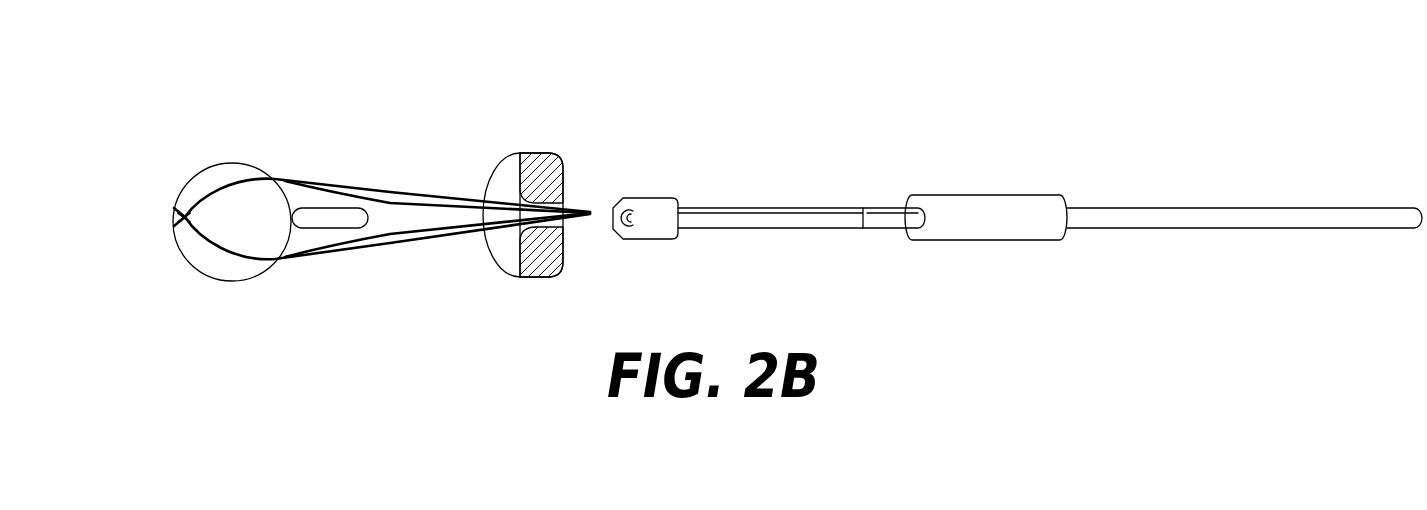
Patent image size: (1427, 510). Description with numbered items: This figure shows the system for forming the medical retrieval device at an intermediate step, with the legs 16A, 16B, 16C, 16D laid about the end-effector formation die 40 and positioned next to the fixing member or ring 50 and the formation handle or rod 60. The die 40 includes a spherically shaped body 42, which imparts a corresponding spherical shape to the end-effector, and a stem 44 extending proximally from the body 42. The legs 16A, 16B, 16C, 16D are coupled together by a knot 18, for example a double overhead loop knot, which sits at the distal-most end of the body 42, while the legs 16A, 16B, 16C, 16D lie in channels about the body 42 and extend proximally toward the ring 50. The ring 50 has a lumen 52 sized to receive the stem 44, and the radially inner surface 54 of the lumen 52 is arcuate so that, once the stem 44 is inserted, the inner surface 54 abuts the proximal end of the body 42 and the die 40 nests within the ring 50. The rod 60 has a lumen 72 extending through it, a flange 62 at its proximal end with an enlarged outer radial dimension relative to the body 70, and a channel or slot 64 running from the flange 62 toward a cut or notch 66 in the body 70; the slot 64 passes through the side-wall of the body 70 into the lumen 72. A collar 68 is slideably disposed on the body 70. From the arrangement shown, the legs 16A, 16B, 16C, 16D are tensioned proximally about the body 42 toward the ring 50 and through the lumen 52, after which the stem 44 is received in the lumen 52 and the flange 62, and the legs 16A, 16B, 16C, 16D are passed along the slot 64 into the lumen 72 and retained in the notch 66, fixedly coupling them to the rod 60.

The end-effector formation die 40 is at (288, 118).
The body 42 is at (226, 162).
The stem 44 is at (336, 220).
The leg 16A is at (184, 217).
The leg 16B is at (225, 186).
The leg 16C is at (208, 248).
The leg 16D is at (183, 219).
The knot 18 is at (183, 218).
The fixing member or ring 50 is at (540, 110).
The lumen 52 is at (567, 204).
The radially inner surface 54 is at (527, 193).
The formation handle or rod 60 is at (1070, 88).
The flange 62 is at (655, 238).
The channel or slot 64 is at (803, 208).
The cut or notch 66 is at (872, 232).
The collar 68 is at (990, 195).
The body 70 is at (1228, 208).
The lumen 72 is at (622, 232).